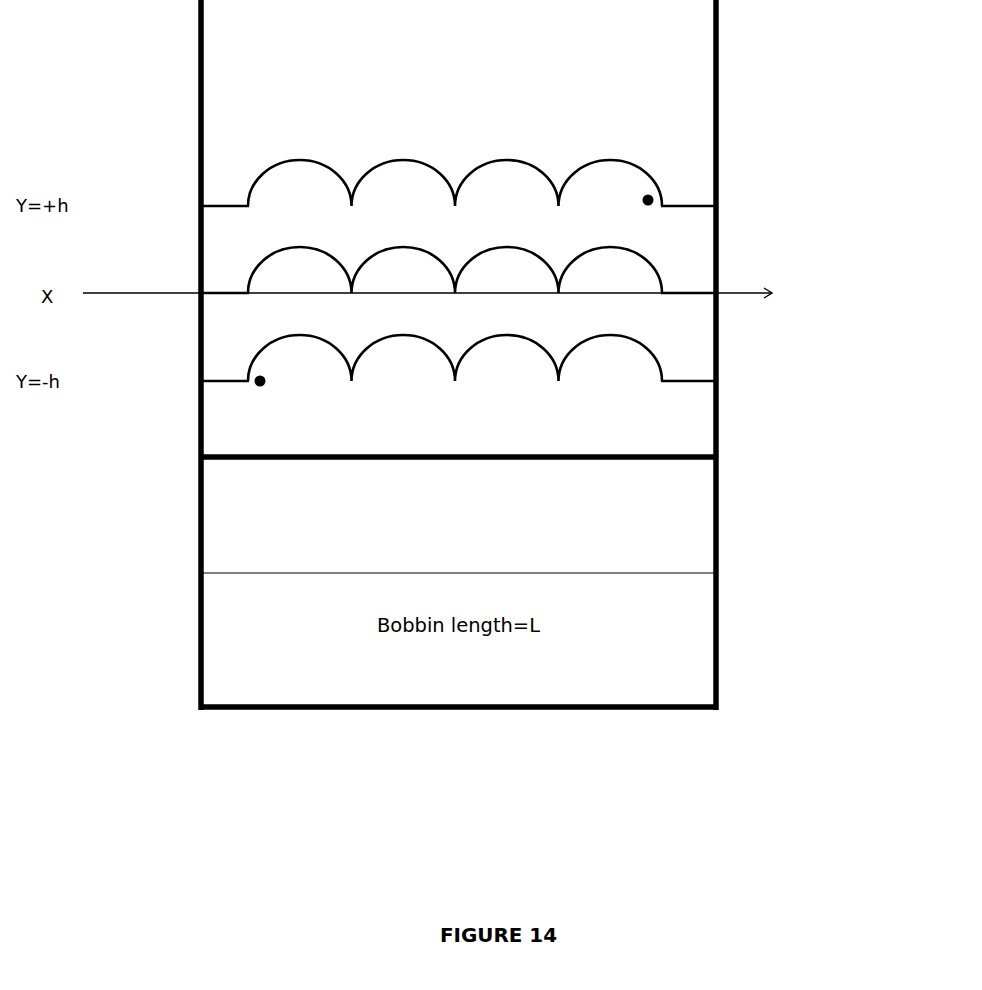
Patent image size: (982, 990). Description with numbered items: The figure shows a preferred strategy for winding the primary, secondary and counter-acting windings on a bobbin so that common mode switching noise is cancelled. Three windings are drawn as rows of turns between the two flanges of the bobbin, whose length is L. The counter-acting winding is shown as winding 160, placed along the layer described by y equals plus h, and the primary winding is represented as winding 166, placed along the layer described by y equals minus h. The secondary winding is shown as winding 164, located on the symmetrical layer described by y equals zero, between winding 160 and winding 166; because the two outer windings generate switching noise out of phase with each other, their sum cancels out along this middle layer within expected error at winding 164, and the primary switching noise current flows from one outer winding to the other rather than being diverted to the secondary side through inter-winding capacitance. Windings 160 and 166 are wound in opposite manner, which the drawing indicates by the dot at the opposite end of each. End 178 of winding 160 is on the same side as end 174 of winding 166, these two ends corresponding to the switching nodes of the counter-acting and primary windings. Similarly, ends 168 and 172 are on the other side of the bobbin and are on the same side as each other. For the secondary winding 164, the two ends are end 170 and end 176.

The winding 160 is at (638, 165).
The winding 164 is at (640, 255).
The winding 166 is at (648, 349).
The end 168 is at (200, 203).
The end 170 is at (200, 292).
The end 172 is at (200, 383).
The end 174 is at (716, 379).
The end 176 is at (716, 291).
The end 178 is at (716, 201).